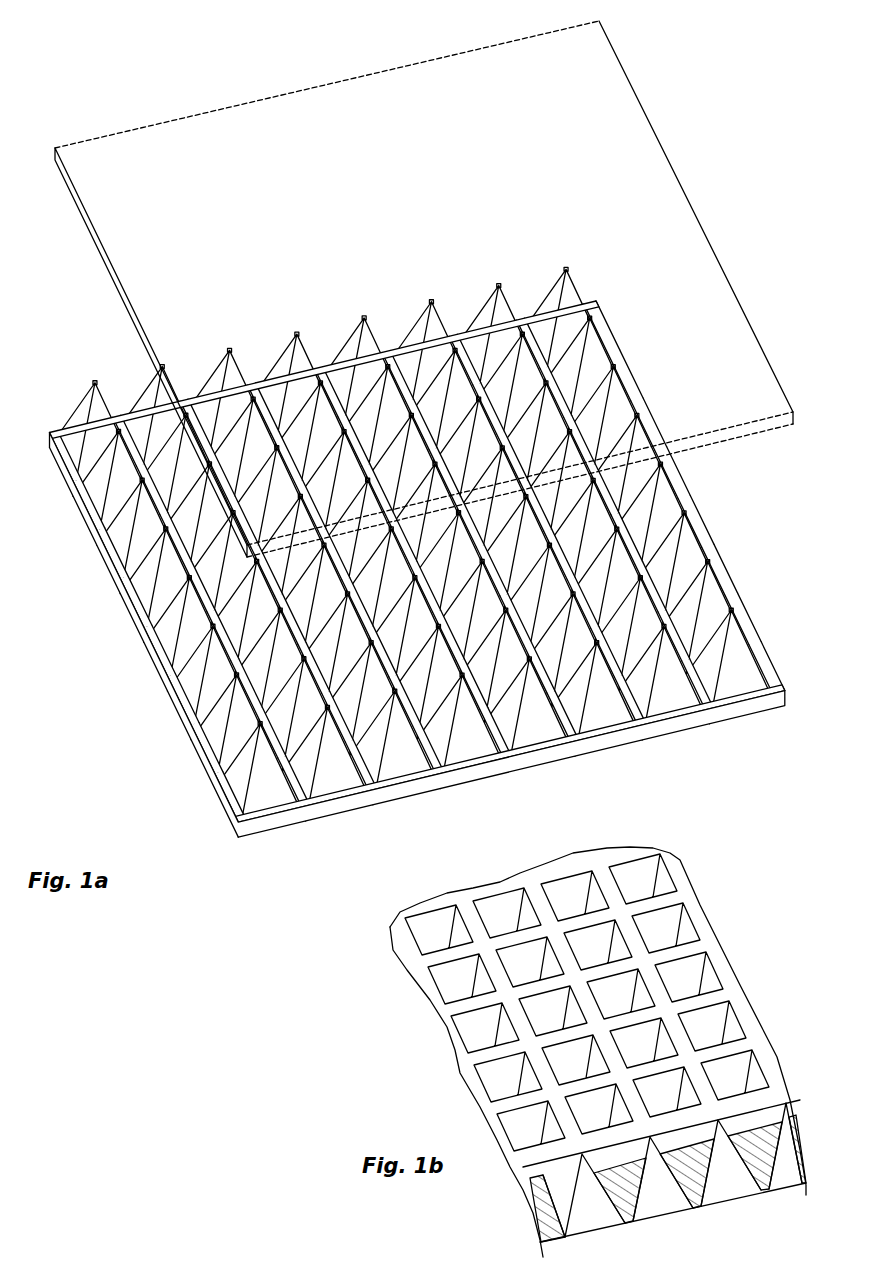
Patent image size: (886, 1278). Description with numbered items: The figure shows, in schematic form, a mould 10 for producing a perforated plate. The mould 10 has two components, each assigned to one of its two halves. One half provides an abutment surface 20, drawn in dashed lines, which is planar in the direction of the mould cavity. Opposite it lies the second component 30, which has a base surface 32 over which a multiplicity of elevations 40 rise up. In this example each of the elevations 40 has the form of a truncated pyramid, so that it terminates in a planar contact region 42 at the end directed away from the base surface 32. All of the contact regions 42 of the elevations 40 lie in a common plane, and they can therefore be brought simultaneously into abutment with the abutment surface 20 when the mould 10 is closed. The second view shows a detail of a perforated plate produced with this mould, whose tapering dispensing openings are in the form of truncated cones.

The mould 10 is at (406, 552).
The abutment surface 20 is at (130, 150).
The second component 30 is at (84, 518).
The base surface 32 is at (118, 592).
The elevations 40 is at (186, 750).
The contact region 42 is at (167, 726).